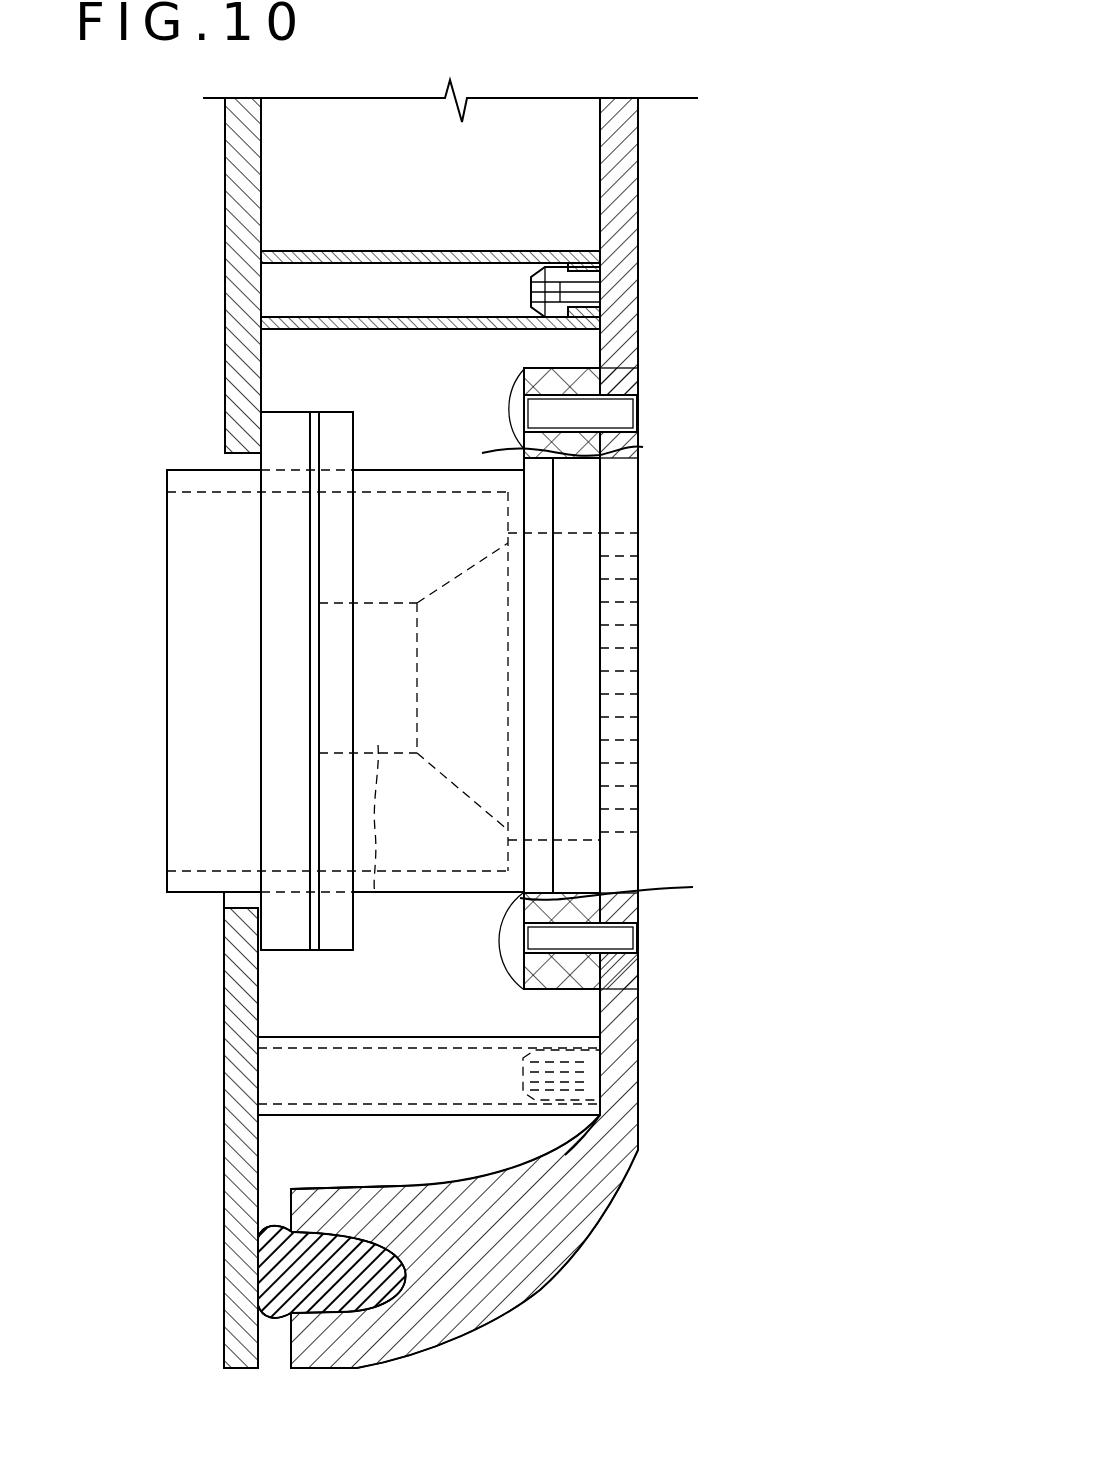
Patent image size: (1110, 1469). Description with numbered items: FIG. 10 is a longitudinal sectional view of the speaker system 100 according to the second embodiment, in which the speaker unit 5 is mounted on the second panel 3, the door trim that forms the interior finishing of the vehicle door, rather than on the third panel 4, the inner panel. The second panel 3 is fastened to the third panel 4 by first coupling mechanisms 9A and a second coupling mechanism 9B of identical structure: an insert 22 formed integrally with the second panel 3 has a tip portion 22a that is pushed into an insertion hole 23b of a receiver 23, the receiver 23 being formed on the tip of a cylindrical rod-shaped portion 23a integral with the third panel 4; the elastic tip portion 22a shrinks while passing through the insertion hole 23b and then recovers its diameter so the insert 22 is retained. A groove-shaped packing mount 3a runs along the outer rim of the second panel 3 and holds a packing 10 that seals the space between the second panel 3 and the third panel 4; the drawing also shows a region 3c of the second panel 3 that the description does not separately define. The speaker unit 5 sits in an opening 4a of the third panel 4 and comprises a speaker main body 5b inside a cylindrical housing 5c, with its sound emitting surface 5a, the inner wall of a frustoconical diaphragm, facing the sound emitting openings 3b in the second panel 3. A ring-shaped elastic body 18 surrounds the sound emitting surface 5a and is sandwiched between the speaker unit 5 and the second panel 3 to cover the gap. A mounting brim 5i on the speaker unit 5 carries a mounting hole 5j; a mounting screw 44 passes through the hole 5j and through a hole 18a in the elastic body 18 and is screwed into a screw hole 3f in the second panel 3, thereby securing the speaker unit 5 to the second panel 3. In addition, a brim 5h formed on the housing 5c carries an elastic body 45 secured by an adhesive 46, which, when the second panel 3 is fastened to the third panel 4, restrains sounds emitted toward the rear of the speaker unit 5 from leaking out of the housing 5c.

The speaker system 100 is at (790, 160).
The second panel 3 is at (640, 152).
The packing mount 3a is at (407, 1290).
The openings 3b is at (640, 590).
The housing curved portion 3c is at (620, 1163).
The screw hole 3f is at (633, 400).
The third panel 4 is at (228, 157).
The opening 4a is at (228, 912).
The speaker unit 5 is at (167, 607).
The sound emitting surface 5a is at (470, 610).
The speaker main body 5b is at (385, 840).
The housing 5c is at (187, 808).
The brim 5h is at (338, 450).
The mounting brim 5i is at (545, 728).
The mounting hole 5j is at (527, 378).
The first coupling mechanisms 9A is at (345, 1035).
The second coupling mechanism 9B is at (322, 248).
The packing 10 is at (262, 1262).
The elastic body 18 is at (565, 665).
The hole 18a is at (587, 433).
The insert 22 is at (600, 292).
The tip portion 22a is at (530, 290).
The receiver 23 is at (590, 325).
The cylindrical rod-shaped portion 23a is at (435, 250).
The insertion hole 23b is at (572, 250).
The mounting screw 44 is at (510, 408).
The elastic body 45 is at (283, 412).
The adhesive 46 is at (320, 412).